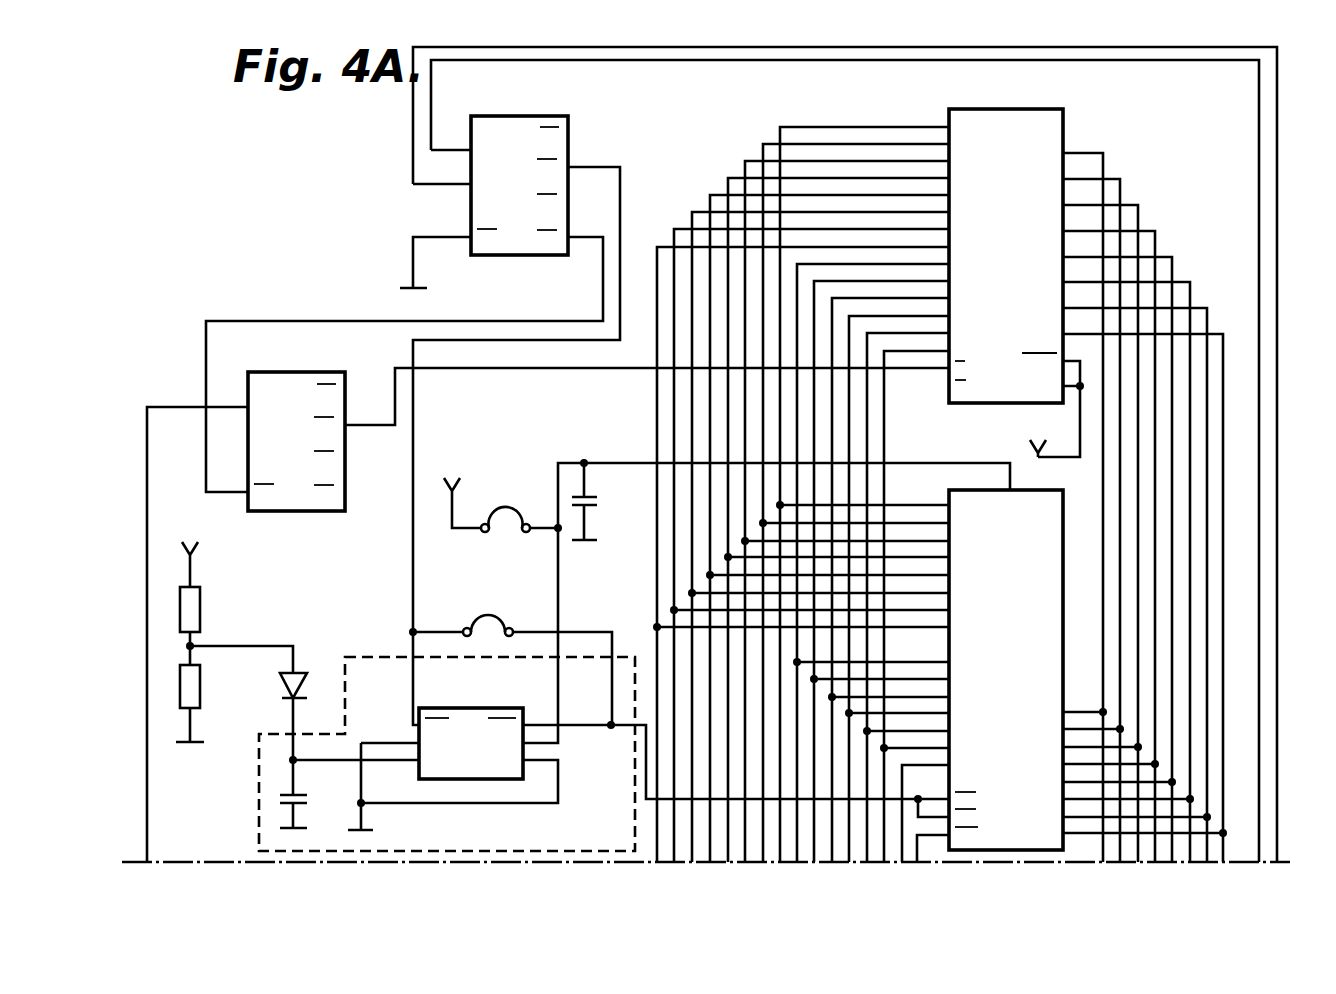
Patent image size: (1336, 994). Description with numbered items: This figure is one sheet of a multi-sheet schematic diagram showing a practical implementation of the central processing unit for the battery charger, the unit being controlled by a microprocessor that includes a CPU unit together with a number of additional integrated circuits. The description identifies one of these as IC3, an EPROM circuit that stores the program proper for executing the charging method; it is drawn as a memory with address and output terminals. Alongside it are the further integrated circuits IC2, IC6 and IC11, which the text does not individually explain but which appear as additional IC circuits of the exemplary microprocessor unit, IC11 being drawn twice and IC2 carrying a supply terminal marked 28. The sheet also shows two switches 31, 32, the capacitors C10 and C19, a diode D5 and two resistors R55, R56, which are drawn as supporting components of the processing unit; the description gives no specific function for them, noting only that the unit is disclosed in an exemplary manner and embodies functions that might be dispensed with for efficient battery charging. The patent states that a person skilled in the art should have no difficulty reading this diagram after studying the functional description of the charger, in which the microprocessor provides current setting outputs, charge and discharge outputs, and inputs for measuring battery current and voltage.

The Vcc supply pin of RAM IC2 28 is at (1019, 488).
The switch 31 is at (487, 610).
The switch 32 is at (505, 506).
The 62256 static RAM IC2 is at (998, 530).
The EPROM circuit IC3 is at (1046, 131).
The DS 1210 nonvolatile controller IC6 is at (468, 718).
The 139 decoder IC11 is at (513, 237).
The capacitor C10 is at (300, 793).
The capacitor C19 is at (590, 508).
The diode D5 is at (298, 674).
The resistor R55 is at (196, 607).
The resistor R56 is at (196, 697).